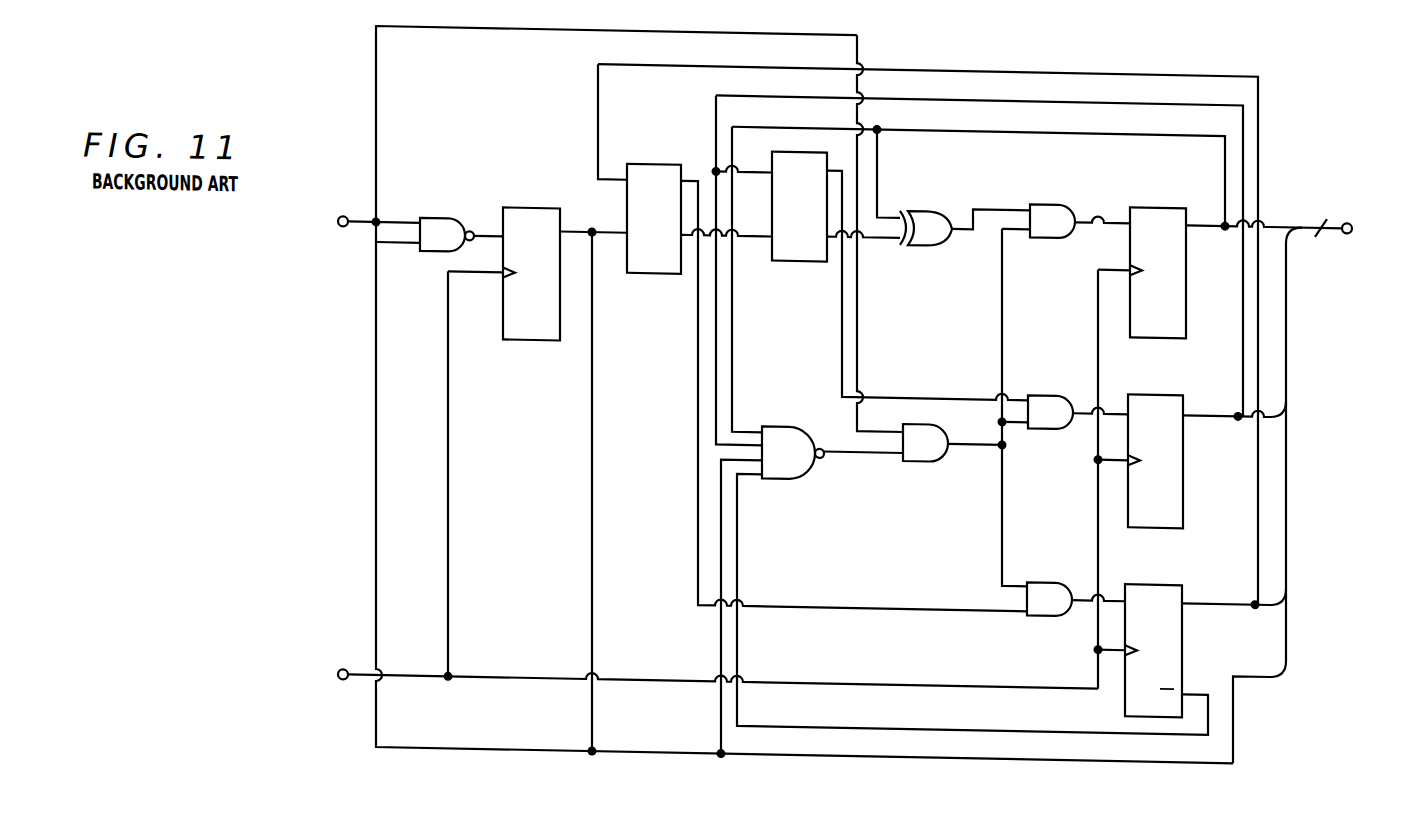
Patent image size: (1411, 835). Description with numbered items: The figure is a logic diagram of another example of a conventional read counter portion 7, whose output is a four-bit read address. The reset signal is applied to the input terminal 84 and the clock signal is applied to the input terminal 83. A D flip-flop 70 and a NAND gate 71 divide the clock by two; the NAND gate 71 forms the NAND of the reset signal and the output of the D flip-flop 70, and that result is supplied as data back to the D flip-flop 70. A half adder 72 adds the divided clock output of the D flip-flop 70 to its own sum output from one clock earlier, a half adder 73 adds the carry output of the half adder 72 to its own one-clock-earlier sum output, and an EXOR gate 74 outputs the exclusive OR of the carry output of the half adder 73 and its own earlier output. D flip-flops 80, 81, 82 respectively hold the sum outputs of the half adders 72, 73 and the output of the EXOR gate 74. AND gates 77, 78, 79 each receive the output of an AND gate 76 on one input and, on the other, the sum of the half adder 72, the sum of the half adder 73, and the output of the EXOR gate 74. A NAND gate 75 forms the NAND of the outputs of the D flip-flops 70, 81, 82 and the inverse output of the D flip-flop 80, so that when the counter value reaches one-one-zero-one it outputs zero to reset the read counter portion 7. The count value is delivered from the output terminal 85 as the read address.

The read counter portion 7 is at (322, 64).
The D flip-flop 70 is at (537, 332).
The NAND gate 71 is at (437, 224).
The half adder 72 is at (660, 262).
The half adder 73 is at (803, 246).
The EXOR gate 74 is at (922, 238).
The NAND gate 75 is at (787, 467).
The AND gate 76 is at (920, 452).
The AND gate 77 is at (1050, 603).
The AND gate 78 is at (1055, 411).
The AND gate 79 is at (1055, 226).
The D flip-flop 80 is at (1150, 578).
The D flip-flop 81 is at (1152, 390).
The D flip-flop 82 is at (1155, 203).
The input terminal 83 is at (340, 668).
The input terminal 84 is at (342, 215).
The output terminal 85 is at (1342, 217).